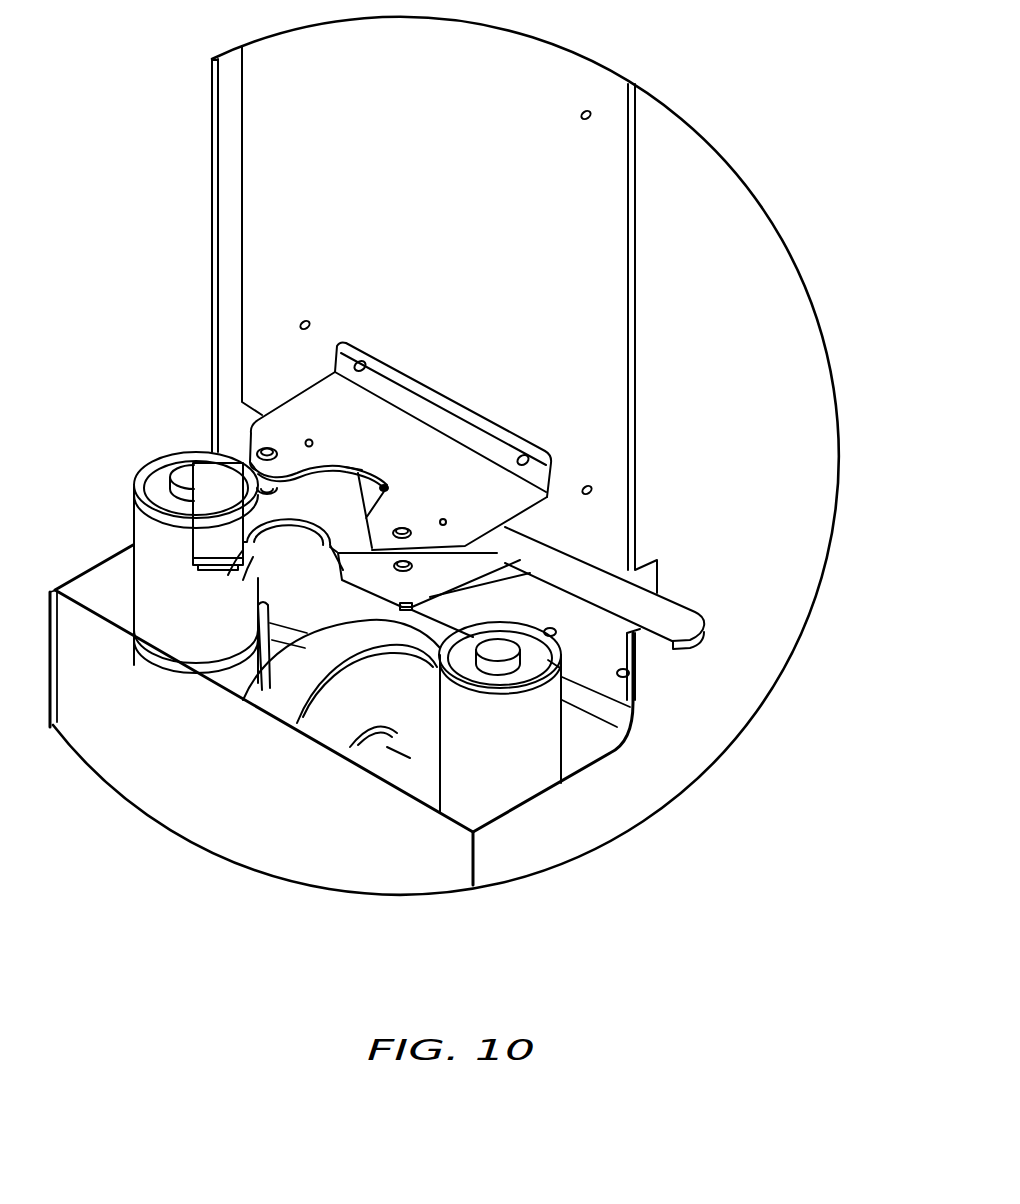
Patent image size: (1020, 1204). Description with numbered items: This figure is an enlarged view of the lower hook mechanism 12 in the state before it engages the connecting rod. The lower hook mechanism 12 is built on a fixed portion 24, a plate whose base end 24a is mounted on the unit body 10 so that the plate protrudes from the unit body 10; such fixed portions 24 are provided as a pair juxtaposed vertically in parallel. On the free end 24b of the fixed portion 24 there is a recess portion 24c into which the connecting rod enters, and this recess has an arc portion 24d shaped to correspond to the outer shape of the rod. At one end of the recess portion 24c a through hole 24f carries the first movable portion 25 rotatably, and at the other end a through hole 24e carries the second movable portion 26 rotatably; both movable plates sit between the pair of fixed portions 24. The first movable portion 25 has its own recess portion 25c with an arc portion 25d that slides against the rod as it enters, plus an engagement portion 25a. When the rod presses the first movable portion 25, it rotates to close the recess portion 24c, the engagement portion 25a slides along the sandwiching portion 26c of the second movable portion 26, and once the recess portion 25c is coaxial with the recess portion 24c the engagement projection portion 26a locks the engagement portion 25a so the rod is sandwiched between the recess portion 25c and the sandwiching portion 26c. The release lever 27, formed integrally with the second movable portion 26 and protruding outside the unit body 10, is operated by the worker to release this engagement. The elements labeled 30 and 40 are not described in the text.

The unit body 10 is at (752, 462).
The lower hook mechanism 12 is at (381, 336).
The fixed portion 24 is at (510, 497).
The base end 24a is at (522, 432).
The free end 24b is at (250, 466).
The recess portion 24c is at (313, 473).
The arc portion 24d is at (362, 472).
The through hole 24e is at (404, 527).
The through hole 24f is at (258, 448).
The first movable portion 25 is at (212, 505).
The engagement portion 25a is at (340, 575).
The recess portion 25c is at (243, 550).
The arc portion 25d is at (253, 557).
The second movable portion 26 is at (262, 696).
The engagement projection portion 26a is at (383, 481).
The sandwiching portion 26c is at (345, 550).
The release lever 27 is at (683, 636).
The gear 30 is at (413, 760).
The damper 40 is at (150, 555).